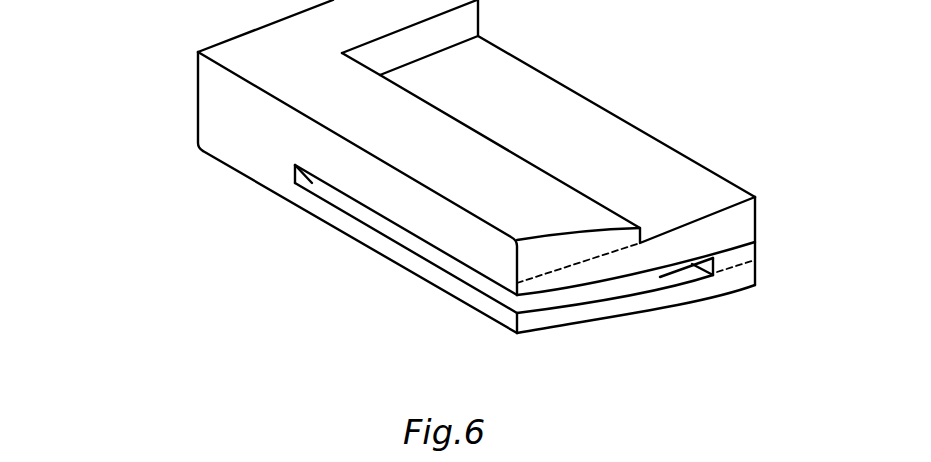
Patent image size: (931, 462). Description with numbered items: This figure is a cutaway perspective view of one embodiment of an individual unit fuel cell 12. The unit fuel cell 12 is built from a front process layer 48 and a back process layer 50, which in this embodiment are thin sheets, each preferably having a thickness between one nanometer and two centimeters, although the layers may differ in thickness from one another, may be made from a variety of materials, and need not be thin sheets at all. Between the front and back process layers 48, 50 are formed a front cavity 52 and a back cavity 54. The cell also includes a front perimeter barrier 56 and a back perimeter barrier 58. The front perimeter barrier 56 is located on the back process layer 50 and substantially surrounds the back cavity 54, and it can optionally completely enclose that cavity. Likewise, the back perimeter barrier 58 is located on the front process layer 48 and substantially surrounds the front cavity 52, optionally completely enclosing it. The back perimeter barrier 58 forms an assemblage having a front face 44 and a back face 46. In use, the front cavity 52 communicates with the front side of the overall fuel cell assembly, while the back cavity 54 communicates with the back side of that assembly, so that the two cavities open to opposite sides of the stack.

The unit fuel cell 12 is at (83, 65).
The front face 44 is at (217, 115).
The back face 46 is at (777, 200).
The front process layer 48 is at (417, 268).
The back process layer 50 is at (653, 257).
The front cavity 52 is at (313, 186).
The back cavity 54 is at (607, 113).
The front perimeter barrier 56 is at (537, 260).
The back perimeter barrier 58 is at (755, 251).